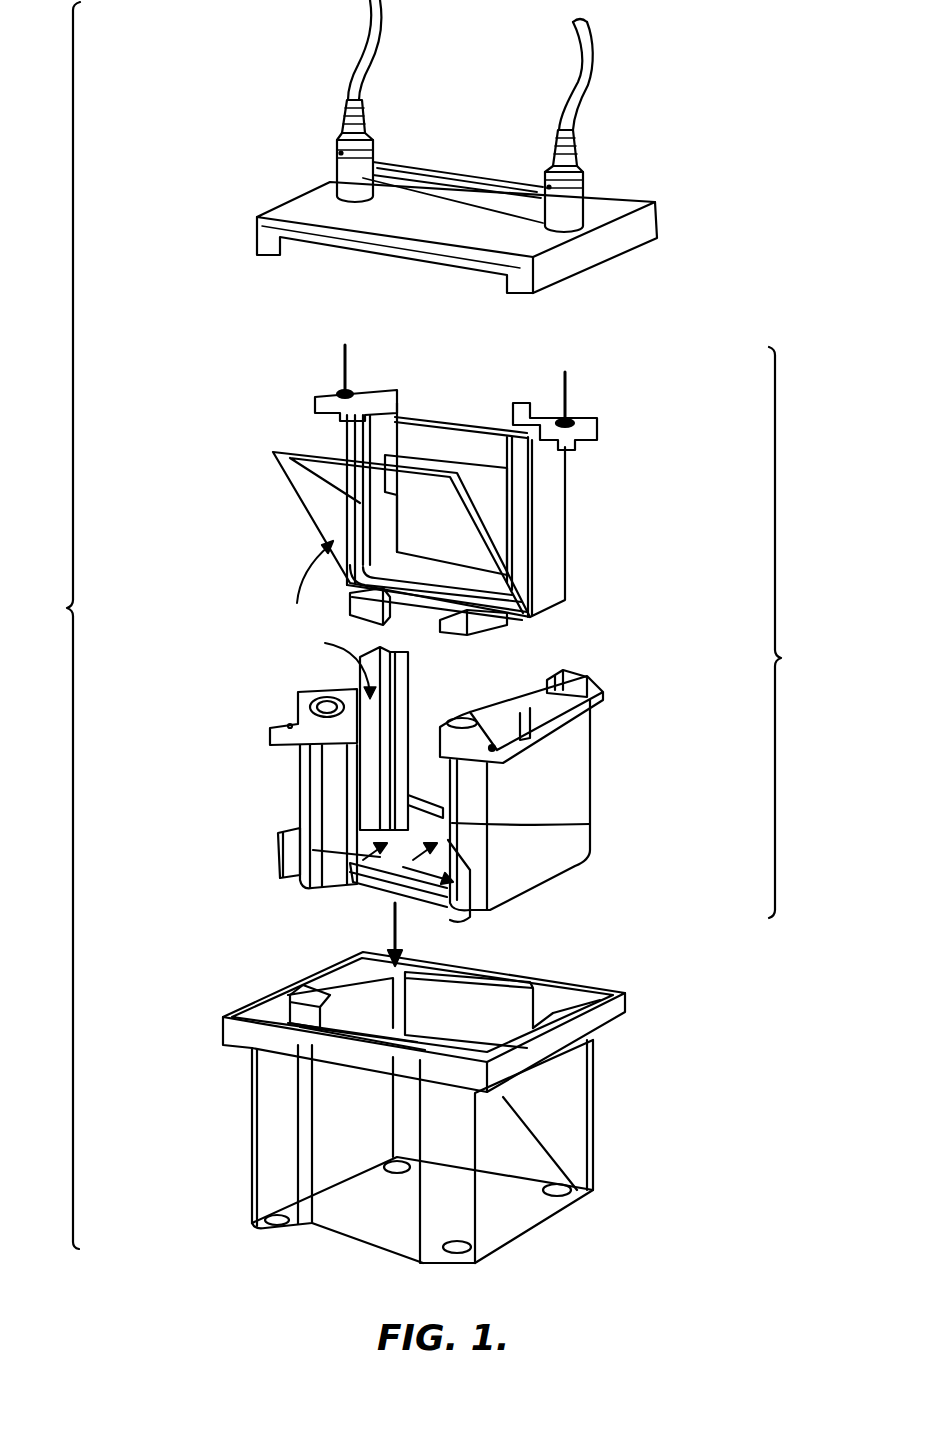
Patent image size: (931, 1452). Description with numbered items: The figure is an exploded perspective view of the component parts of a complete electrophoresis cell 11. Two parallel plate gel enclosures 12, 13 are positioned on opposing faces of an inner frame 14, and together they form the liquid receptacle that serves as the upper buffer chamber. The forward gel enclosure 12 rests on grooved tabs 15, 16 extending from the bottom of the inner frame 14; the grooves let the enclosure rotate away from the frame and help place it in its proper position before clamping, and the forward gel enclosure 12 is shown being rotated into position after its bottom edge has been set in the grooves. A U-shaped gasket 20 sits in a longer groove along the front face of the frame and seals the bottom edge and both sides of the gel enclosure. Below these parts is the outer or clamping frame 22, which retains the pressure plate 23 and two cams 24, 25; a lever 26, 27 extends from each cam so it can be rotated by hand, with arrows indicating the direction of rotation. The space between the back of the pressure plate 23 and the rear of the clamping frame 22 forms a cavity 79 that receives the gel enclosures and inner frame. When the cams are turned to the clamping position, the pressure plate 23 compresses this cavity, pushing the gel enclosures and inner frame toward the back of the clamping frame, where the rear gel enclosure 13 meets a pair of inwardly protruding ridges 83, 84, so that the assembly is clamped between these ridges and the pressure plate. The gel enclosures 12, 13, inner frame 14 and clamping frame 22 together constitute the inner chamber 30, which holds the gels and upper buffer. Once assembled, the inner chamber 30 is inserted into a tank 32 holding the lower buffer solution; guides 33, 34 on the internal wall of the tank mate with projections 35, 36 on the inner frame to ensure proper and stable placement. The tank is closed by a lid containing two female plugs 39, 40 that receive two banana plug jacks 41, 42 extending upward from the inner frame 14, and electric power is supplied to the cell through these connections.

The electrophoresis cell 11 is at (67, 608).
The forward gel enclosure 12 is at (320, 500).
The rear gel enclosure 13 is at (436, 418).
The inner frame 14 is at (550, 489).
The grooved tab 15 is at (367, 610).
The grooved tab 16 is at (463, 637).
The U-shaped gasket 20 is at (423, 543).
The clamping frame 22 is at (550, 777).
The pressure plate 23 is at (320, 683).
The cam 24 is at (327, 770).
The cam 25 is at (590, 824).
The lever 26 is at (278, 833).
The lever 27 is at (452, 923).
The inner chamber 30 is at (783, 658).
The tank 32 is at (577, 1082).
The guide 33 is at (307, 993).
The guide 34 is at (593, 1015).
The projection 35 is at (337, 393).
The projection 36 is at (590, 420).
The female plug 39 is at (375, 150).
The female plug 40 is at (583, 180).
The banana plug jack 41 is at (343, 363).
The banana plug jack 42 is at (567, 418).
The cavity 79 is at (325, 643).
The inwardly protruding ridge 83 is at (403, 690).
The inwardly protruding ridge 84 is at (540, 687).